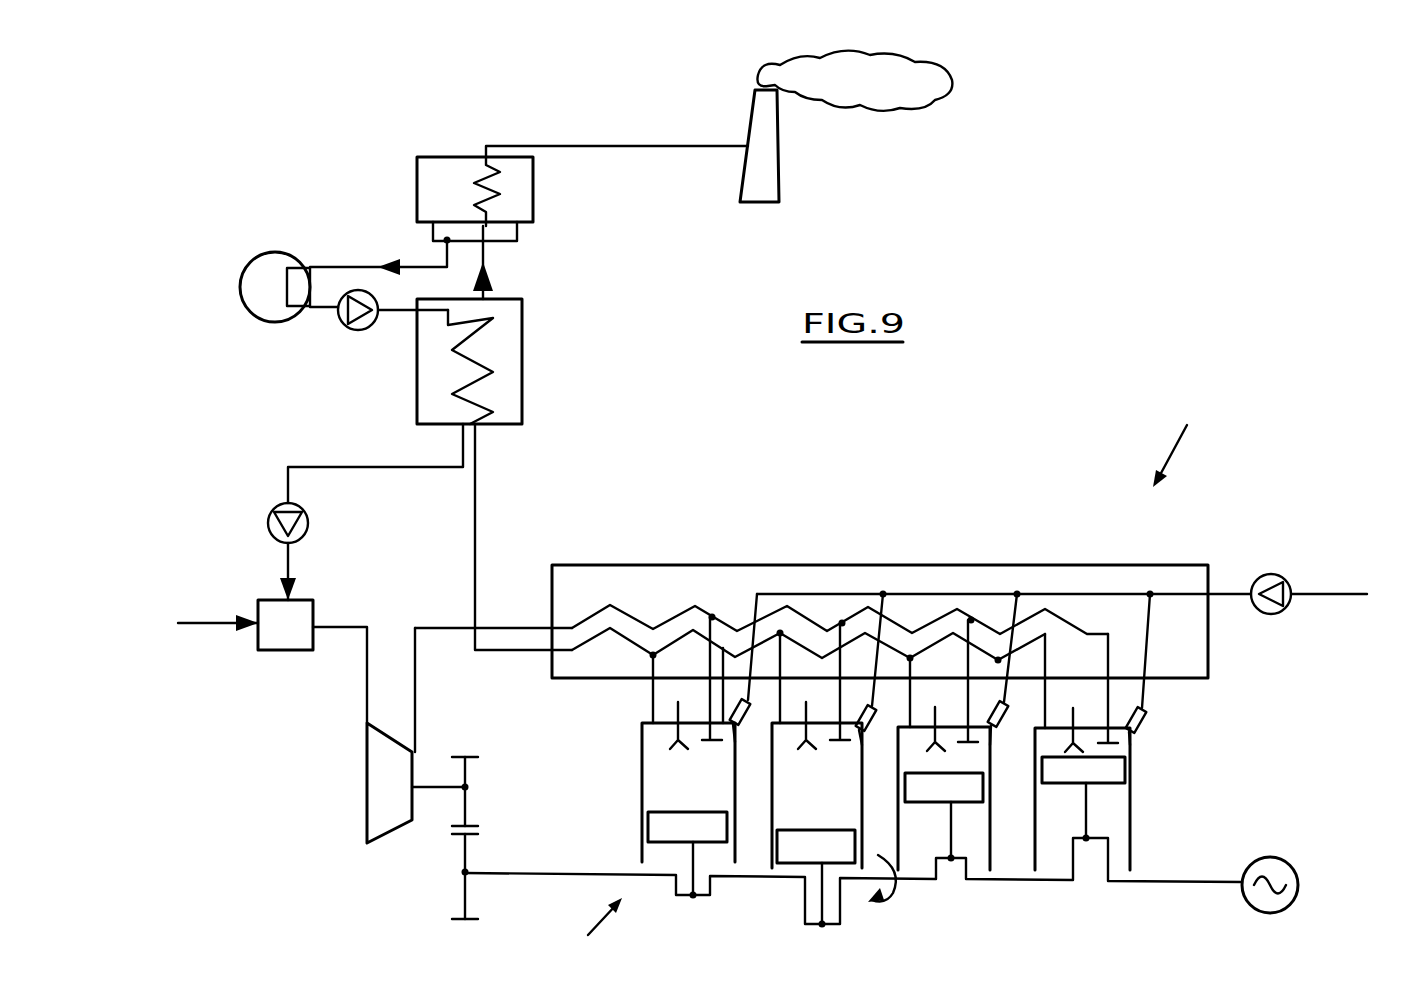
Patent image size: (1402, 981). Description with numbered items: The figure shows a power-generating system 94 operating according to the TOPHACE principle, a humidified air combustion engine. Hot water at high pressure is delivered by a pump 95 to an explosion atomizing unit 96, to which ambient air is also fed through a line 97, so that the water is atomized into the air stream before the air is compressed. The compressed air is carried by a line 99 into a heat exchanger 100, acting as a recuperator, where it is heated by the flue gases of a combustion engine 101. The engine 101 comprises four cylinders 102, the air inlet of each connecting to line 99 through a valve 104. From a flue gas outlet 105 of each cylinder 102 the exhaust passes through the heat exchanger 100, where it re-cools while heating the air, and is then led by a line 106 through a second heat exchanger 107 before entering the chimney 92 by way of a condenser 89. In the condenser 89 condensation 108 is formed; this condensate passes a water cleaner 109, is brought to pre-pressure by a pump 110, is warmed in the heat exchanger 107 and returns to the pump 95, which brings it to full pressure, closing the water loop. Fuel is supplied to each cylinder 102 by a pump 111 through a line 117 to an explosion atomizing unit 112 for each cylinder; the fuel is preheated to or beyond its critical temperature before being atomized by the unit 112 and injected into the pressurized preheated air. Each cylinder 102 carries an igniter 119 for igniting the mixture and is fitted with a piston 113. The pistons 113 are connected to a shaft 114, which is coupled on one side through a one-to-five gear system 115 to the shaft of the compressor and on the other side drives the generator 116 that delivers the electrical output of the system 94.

The condenser 89 is at (535, 192).
The chimney 92 is at (758, 117).
The system 94 is at (1187, 439).
The pump 95 is at (270, 523).
The explosion atomizing unit 96 is at (302, 655).
The line 97 is at (232, 621).
The line 99 is at (416, 682).
The heat exchanger 100 is at (1045, 565).
The combustion engine 101 is at (580, 918).
The cylinder 102 is at (642, 760).
The valve 104 is at (710, 744).
The flue gas outlet 105 is at (653, 680).
The line 106 is at (477, 540).
The heat exchanger 107 is at (512, 405).
The condensation 108 is at (405, 262).
The water cleaner 109 is at (275, 252).
The pump 110 is at (365, 330).
The pump 111 is at (1288, 575).
The explosion atomizing unit 112 is at (753, 705).
The piston 113 is at (660, 822).
The shaft 114 is at (441, 787).
The gear system 115 is at (452, 805).
The generator 116 is at (1278, 870).
The line 117 is at (925, 594).
The igniter 119 is at (678, 708).